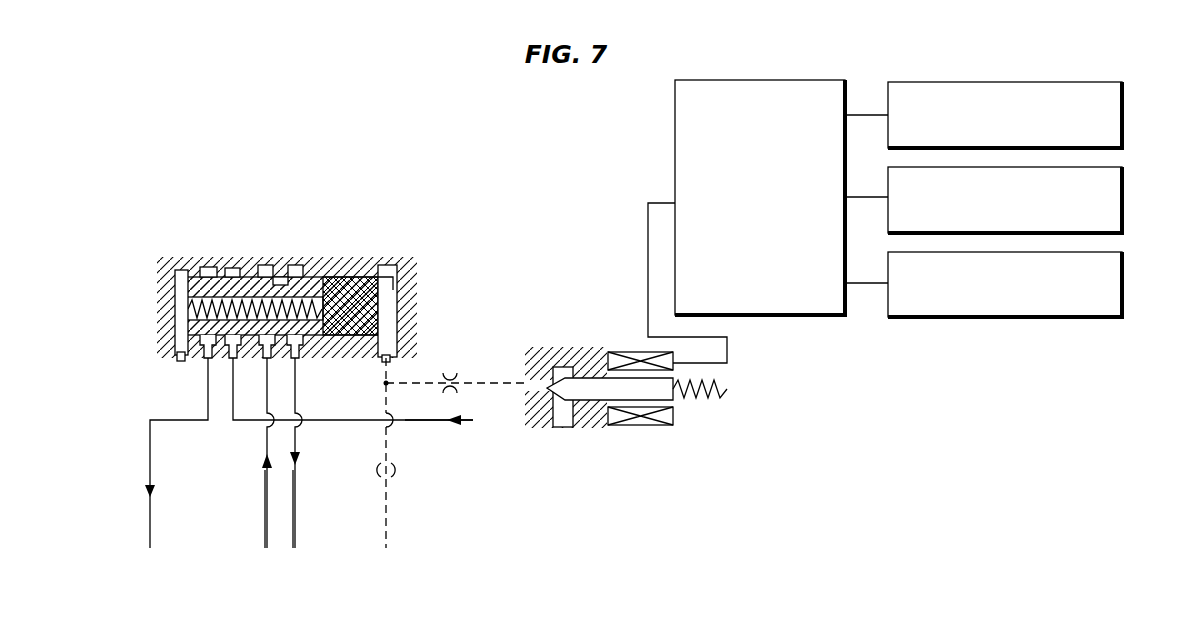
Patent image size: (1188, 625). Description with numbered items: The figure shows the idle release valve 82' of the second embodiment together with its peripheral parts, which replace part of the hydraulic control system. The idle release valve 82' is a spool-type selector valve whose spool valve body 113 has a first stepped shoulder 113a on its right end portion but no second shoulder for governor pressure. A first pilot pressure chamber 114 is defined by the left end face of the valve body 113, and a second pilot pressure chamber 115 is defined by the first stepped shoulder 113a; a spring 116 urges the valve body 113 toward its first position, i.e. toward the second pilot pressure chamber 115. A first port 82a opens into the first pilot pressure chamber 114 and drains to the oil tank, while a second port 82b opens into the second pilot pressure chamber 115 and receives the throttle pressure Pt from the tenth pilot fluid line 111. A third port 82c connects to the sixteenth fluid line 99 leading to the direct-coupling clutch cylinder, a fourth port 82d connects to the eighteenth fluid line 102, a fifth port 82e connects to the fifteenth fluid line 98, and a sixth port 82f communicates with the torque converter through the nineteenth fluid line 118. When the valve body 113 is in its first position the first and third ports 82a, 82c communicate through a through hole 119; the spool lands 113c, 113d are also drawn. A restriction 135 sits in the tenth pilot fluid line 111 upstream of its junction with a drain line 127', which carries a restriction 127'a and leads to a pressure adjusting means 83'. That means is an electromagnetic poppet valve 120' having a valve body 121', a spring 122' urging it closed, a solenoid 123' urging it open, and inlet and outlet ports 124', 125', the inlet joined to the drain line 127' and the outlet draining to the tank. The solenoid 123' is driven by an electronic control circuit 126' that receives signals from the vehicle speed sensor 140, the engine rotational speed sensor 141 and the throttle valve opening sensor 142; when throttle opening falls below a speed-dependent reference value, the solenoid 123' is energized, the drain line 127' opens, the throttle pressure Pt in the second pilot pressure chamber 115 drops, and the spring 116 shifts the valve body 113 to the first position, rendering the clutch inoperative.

The idle release valve 82' is at (290, 256).
The first port 82a is at (178, 360).
The second port 82b is at (394, 362).
The third port 82c is at (208, 362).
The fourth port 82d is at (233, 362).
The fifth port 82e is at (267, 362).
The sixth port 82f is at (296, 362).
The pressure adjusting means 83' is at (696, 358).
The fifteenth fluid line 98 is at (265, 497).
The sixteenth fluid line 99 is at (151, 462).
The eighteenth fluid line 102 is at (406, 422).
The tenth pilot fluid line 111 is at (386, 400).
The spool valve body 113 is at (385, 320).
The first stepped shoulder 113a is at (397, 279).
The spool land 113c is at (280, 267).
The spool land 113d is at (238, 275).
The first pilot pressure chamber 114 is at (167, 280).
The second pilot pressure chamber 115 is at (388, 265).
The spring 116 is at (176, 300).
The nineteenth fluid line 118 is at (294, 497).
The through hole 119 is at (207, 275).
The electromagnetic poppet valve 120' is at (697, 433).
The valve body 121' is at (610, 425).
The spring 122' is at (729, 397).
The solenoid 123' is at (639, 433).
The inlet port 124' is at (558, 364).
The outlet port 125' is at (544, 419).
The electronic control circuit 126' is at (781, 180).
The drain line 127' is at (470, 325).
The restriction 127'a is at (504, 443).
The restriction 135 is at (378, 470).
The vehicle speed sensor 140 is at (1122, 84).
The engine rotational speed sensor 141 is at (1122, 169).
The throttle valve opening sensor 142 is at (1122, 254).
The throttle pressure Pt is at (388, 498).